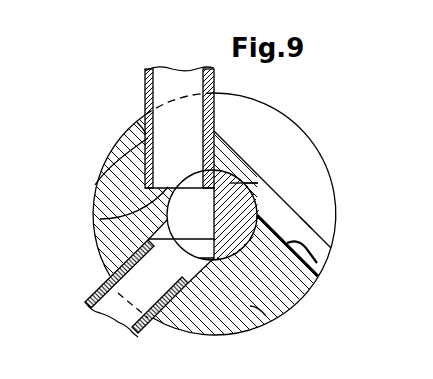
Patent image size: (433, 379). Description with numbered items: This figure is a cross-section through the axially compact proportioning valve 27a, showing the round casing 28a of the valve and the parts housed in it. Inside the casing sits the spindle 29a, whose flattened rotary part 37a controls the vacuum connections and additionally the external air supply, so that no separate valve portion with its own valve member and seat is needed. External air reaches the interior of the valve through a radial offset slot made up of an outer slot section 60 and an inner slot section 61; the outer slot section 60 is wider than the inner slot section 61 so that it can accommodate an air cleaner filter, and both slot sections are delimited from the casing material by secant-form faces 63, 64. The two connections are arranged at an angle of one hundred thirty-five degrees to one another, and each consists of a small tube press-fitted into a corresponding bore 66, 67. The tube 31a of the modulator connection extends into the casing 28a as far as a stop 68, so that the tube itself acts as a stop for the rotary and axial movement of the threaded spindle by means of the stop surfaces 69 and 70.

The outer slot section 60 is at (300, 130).
The tube of the modulator connection 31a is at (208, 110).
The bore 67 is at (143, 143).
The proportioning valve 27a is at (92, 178).
The stop 68 is at (100, 219).
The flattened rotary part 37a is at (148, 239).
The bore 66 is at (184, 279).
The stop surface 70 is at (200, 188).
The stop surface 69 is at (231, 183).
The spindle 29a is at (258, 183).
The secant-form face 63 is at (280, 197).
The inner slot section 61 is at (313, 238).
The secant-form face 64 is at (313, 268).
The proportioning valve casing 28a is at (270, 322).